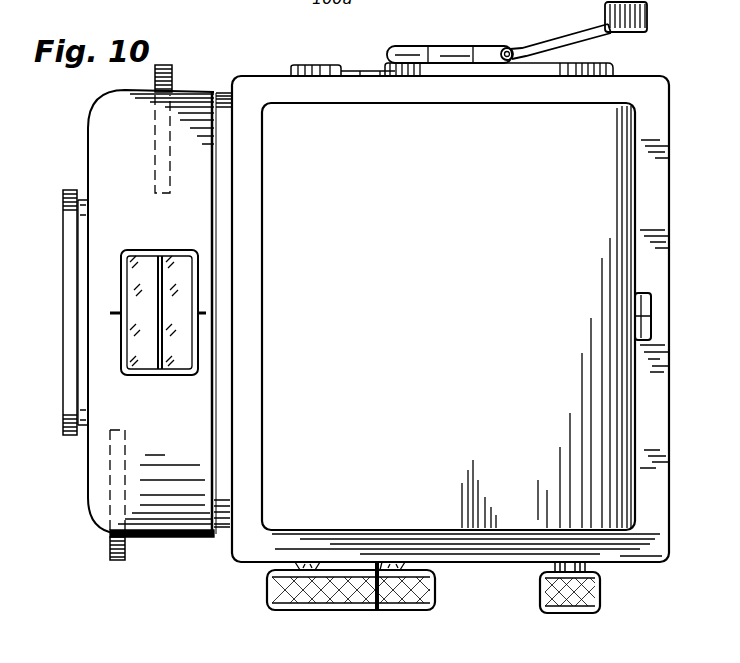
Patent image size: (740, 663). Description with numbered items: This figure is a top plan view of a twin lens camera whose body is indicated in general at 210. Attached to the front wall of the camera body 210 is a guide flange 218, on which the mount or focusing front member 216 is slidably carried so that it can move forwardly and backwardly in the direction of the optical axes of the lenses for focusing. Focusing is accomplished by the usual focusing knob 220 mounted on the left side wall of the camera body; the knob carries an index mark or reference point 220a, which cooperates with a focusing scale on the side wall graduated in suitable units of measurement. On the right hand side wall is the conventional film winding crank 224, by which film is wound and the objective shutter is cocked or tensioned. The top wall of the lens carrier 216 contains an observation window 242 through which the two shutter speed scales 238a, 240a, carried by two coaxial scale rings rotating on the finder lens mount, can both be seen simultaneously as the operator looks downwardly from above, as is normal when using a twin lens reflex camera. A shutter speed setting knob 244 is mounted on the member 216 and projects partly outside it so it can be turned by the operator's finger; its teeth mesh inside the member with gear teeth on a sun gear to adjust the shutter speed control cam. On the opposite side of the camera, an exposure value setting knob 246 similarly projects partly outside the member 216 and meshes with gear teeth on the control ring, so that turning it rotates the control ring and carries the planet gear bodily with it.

The camera body 210 is at (508, 553).
The focusing front member 216 is at (85, 455).
The guide flange 218 is at (218, 528).
The focusing knob 220 is at (270, 590).
The index mark 220a is at (380, 562).
The film winding crank 224 is at (465, 55).
The shutter speed scale 238a is at (133, 257).
The shutter speed scale 240a is at (170, 270).
The observation window 242 is at (150, 378).
The shutter speed setting knob 244 is at (108, 551).
The exposure value setting knob 246 is at (172, 72).